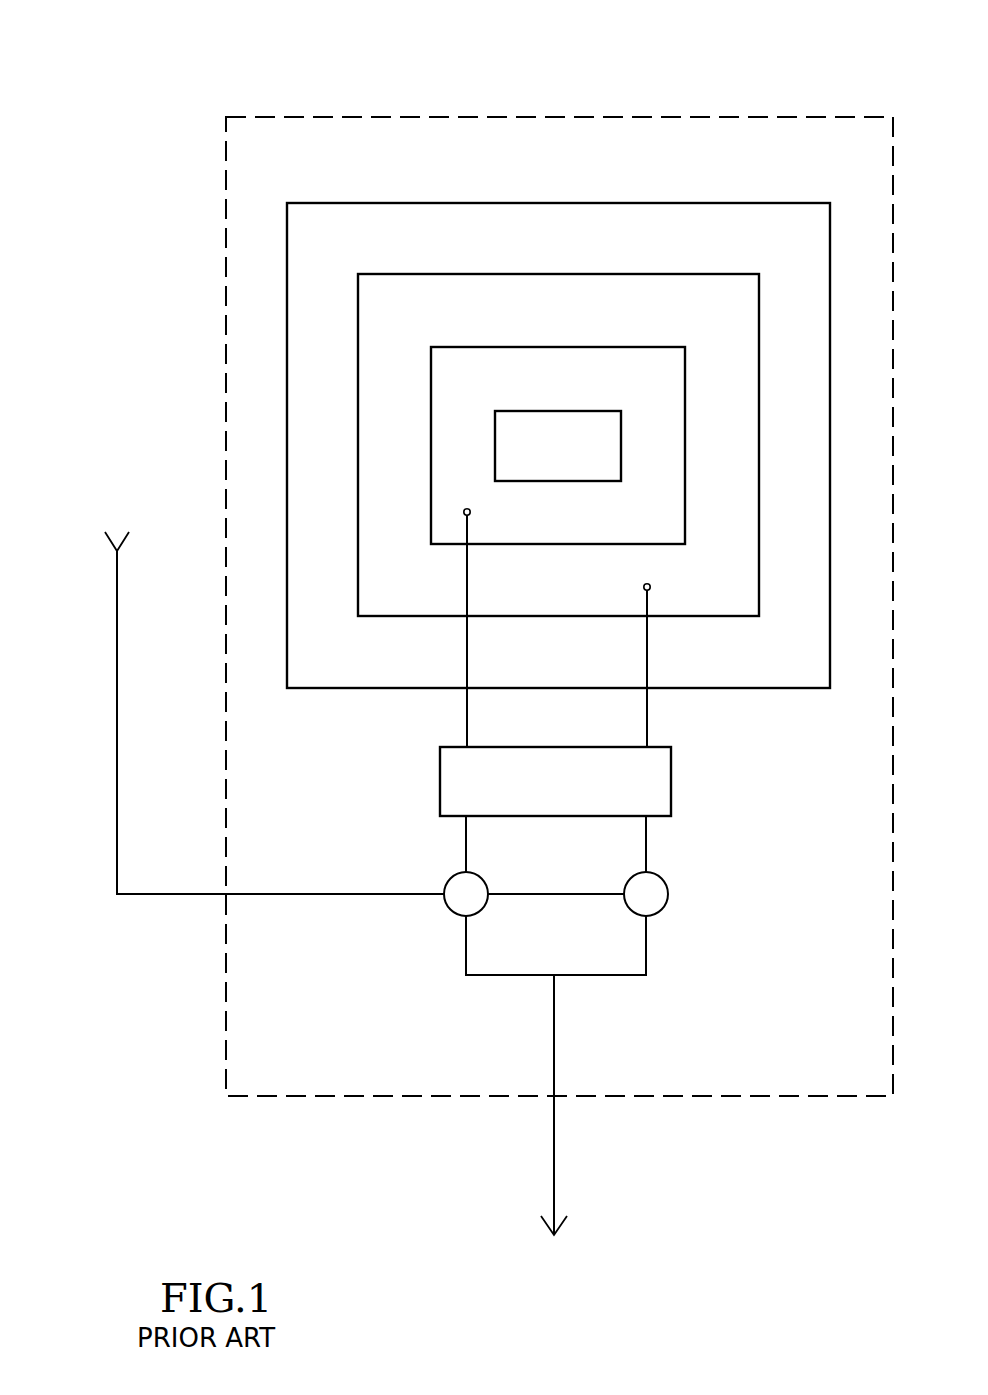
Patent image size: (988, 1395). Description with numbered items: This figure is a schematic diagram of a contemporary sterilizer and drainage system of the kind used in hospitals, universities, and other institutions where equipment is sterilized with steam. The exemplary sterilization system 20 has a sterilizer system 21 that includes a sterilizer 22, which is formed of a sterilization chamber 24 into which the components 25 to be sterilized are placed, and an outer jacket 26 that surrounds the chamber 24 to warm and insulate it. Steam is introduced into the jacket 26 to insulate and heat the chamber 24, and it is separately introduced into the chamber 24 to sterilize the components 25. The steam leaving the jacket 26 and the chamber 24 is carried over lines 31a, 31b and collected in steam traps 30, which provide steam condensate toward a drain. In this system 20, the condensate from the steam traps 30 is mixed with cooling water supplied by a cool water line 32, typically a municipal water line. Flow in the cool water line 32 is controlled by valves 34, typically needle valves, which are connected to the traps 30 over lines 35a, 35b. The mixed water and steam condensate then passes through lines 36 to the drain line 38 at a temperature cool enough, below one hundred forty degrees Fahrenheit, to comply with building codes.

The sterilization system 20 is at (120, 139).
The sterilizer system 21 is at (392, 118).
The sterilizer 22 is at (392, 203).
The outer jacket 26 is at (602, 274).
The sterilization chamber 24 is at (486, 388).
The components 25 is at (569, 454).
The line 31a is at (466, 712).
The line 31b is at (647, 722).
The steam traps 30 is at (671, 778).
The line 35a is at (466, 850).
The line 35b is at (646, 846).
The valves 34 is at (450, 907).
The cool water line 32 is at (316, 894).
The lines 36 is at (615, 975).
The drain line 38 is at (554, 1148).